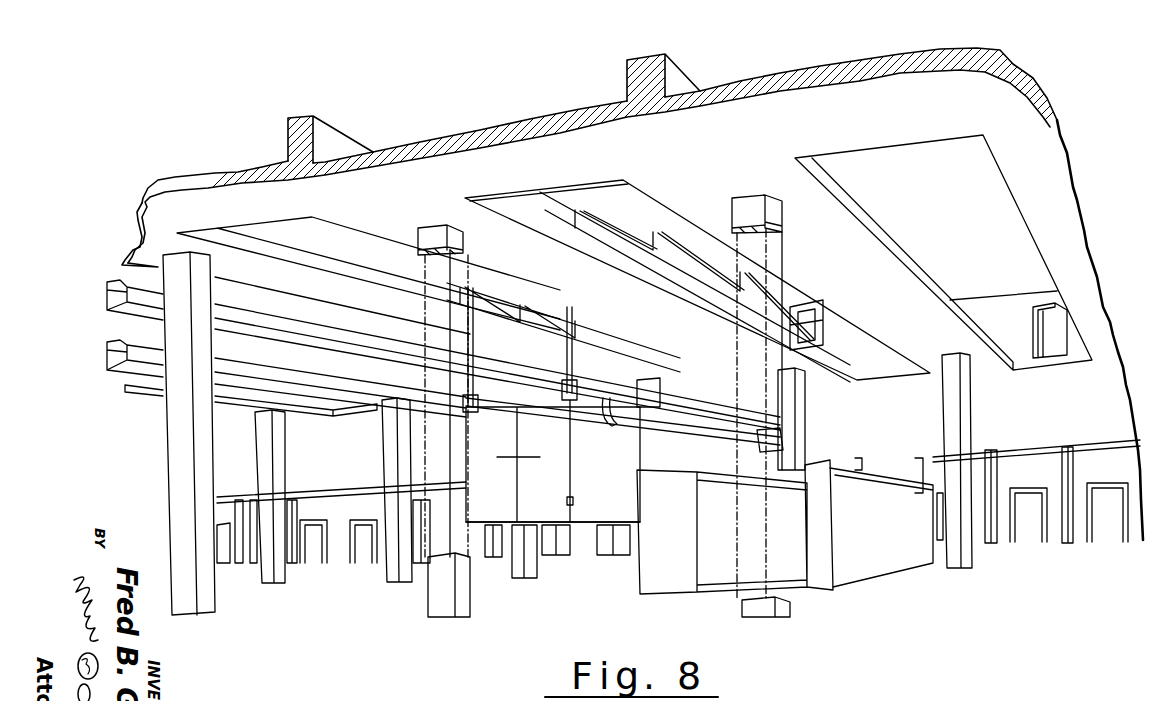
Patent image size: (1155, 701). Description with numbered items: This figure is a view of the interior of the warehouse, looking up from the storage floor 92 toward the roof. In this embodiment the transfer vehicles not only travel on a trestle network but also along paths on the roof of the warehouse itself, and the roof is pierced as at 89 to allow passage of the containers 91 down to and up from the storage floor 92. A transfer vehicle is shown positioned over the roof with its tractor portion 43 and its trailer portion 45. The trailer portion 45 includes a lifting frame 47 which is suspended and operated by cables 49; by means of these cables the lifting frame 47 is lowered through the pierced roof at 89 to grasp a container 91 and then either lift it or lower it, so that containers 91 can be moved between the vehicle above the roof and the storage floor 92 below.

The pierced portion of the roof 89 is at (358, 238).
The trailer portion 45 is at (703, 268).
The tractor portion 43 is at (828, 337).
The cables 49 is at (563, 355).
The lifting frame 47 is at (691, 420).
The containers 91 is at (587, 522).
The storage floor 92 is at (350, 592).